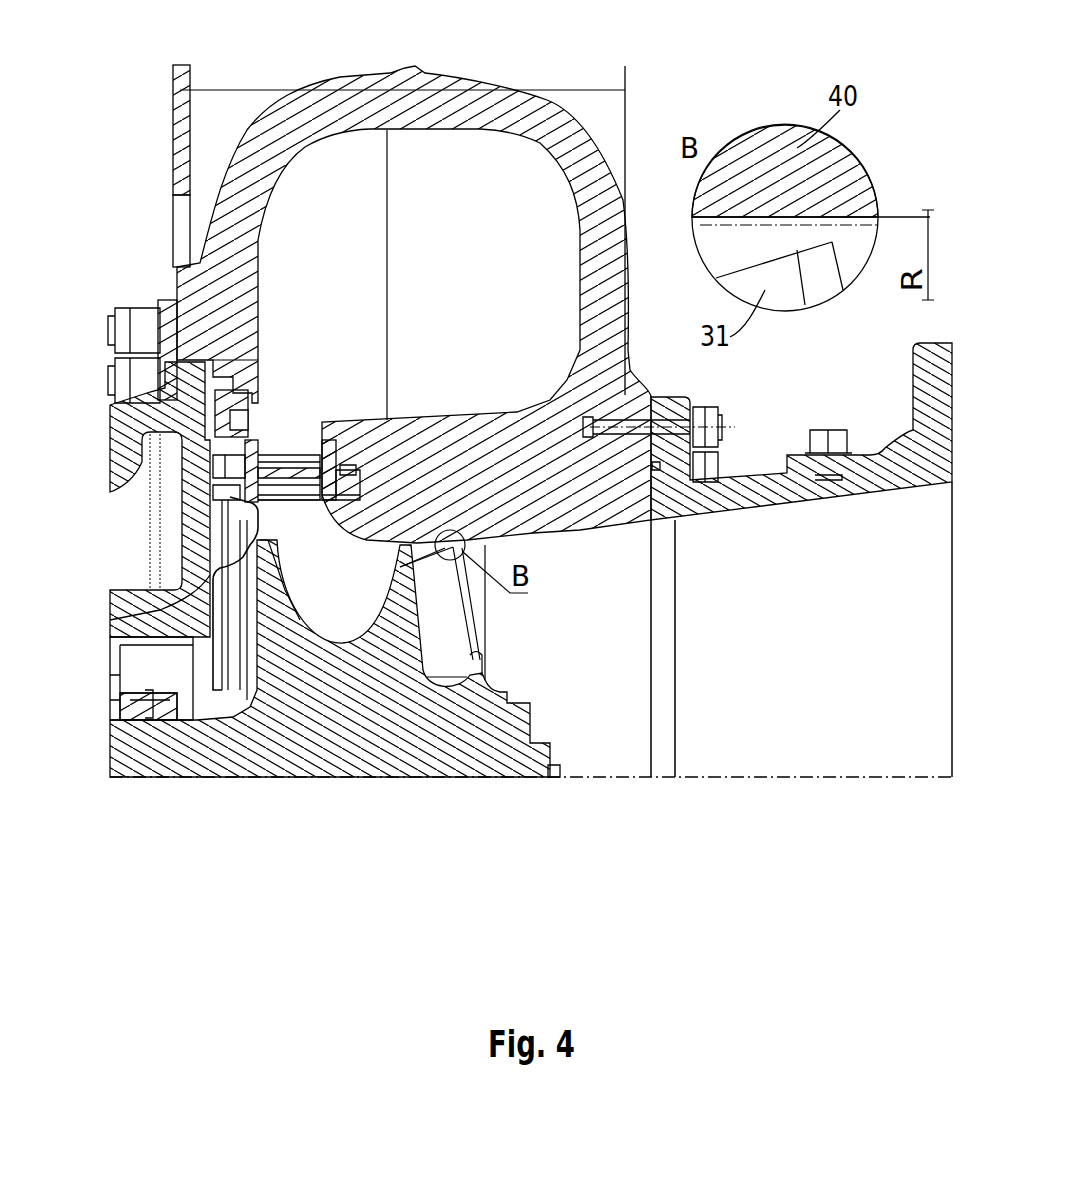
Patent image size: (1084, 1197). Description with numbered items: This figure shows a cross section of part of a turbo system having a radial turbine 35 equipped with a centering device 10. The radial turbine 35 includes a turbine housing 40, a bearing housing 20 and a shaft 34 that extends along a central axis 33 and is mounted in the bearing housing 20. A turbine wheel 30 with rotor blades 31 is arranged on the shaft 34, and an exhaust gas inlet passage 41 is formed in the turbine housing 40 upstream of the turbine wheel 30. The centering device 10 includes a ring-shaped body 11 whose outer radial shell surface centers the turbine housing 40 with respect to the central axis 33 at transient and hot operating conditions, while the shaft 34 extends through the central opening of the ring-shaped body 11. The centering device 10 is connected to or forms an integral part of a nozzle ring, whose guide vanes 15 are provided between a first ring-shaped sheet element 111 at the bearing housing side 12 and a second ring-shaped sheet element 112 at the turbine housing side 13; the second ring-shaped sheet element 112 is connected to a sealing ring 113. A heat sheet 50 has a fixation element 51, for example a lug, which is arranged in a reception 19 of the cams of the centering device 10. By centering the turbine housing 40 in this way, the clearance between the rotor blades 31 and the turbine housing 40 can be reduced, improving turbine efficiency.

The centering device 10 is at (226, 352).
The ring-shaped body 11 is at (258, 400).
The bearing housing side 12 is at (210, 382).
The turbine housing side 13 is at (258, 436).
The guide vanes 15 is at (284, 490).
The reception 19 is at (214, 456).
The bearing housing 20 is at (120, 432).
The turbine wheel 30 is at (492, 737).
The rotor blades 31 is at (398, 612).
The central axis 33 is at (578, 772).
The shaft 34 is at (160, 772).
The radial turbine 35 is at (318, 405).
The turbine housing 40 is at (540, 117).
The exhaust gas inlet passage 41 is at (306, 450).
The heat sheet 50 is at (212, 588).
The fixation element 51 is at (214, 500).
The first ring-shaped sheet element 111 is at (212, 478).
The second ring-shaped sheet element 112 is at (332, 458).
The sealing ring 113 is at (362, 475).